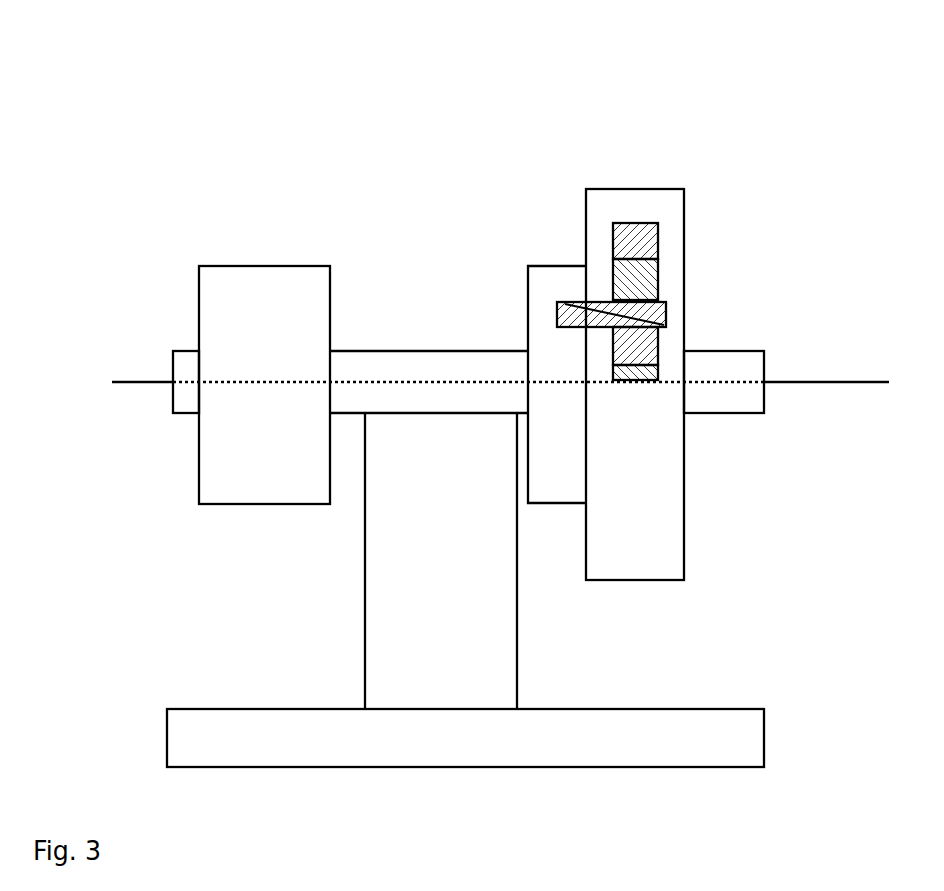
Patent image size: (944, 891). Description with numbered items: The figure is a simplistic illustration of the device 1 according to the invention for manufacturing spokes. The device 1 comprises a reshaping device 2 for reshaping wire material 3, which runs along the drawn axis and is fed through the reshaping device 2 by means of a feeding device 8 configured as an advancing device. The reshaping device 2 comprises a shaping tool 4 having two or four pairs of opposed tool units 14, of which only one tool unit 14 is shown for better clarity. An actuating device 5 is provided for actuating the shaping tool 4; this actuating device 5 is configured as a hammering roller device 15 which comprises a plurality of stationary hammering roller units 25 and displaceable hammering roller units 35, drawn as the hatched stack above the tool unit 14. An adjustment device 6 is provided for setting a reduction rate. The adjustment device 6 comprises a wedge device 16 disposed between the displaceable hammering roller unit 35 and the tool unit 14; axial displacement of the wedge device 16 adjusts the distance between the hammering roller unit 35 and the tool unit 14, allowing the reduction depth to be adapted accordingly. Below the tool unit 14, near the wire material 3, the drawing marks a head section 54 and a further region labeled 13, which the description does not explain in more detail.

The device 1 is at (133, 105).
The reshaping device 2 is at (693, 148).
The wire material 3 is at (140, 381).
The shaping tool 4 is at (602, 357).
The actuating device 5 is at (605, 205).
The adjustment device 6 is at (553, 266).
The feeding device 8 is at (217, 305).
The cutting edge region 13 is at (636, 390).
The tool unit 14 is at (658, 353).
The hammering roller device 15 is at (698, 261).
The wedge device 16 is at (557, 308).
The hammering roller unit 25 is at (660, 238).
The hammering roller unit 35 is at (660, 278).
The head section 54 is at (652, 375).